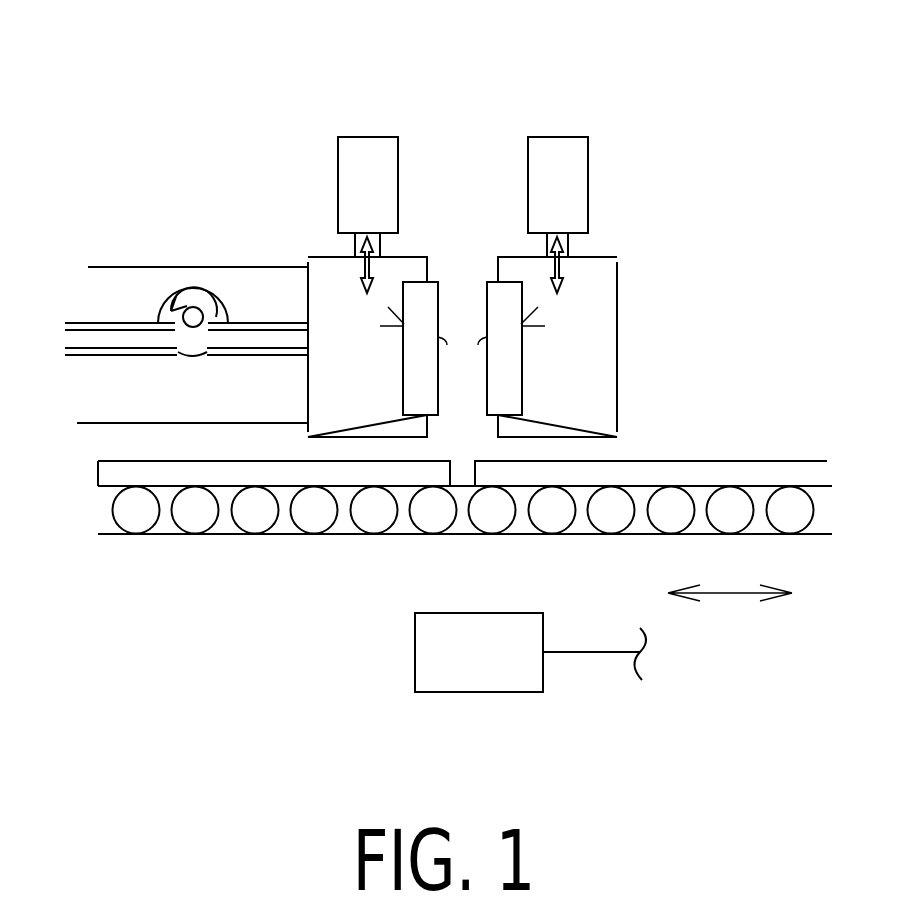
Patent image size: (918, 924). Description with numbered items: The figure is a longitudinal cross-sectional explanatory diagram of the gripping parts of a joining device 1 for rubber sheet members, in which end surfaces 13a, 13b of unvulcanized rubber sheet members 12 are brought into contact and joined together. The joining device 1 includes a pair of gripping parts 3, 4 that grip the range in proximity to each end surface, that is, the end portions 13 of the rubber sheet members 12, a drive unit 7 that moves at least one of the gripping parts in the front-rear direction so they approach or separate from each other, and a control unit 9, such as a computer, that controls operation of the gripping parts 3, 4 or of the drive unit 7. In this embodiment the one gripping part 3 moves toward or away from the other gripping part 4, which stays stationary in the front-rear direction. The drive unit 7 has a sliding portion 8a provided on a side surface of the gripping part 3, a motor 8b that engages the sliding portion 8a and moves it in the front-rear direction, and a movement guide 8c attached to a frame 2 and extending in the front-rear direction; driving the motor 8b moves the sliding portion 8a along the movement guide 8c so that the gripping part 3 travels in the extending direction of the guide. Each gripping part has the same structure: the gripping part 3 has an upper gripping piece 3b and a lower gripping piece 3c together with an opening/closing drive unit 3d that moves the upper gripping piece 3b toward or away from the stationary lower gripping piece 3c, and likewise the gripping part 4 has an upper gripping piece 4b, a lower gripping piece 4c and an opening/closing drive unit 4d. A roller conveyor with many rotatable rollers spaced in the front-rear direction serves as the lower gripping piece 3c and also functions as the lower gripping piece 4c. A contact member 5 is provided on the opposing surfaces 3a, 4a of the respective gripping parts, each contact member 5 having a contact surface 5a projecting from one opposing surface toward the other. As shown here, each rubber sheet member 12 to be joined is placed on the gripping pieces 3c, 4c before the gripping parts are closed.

The joining device 1 is at (693, 130).
The frame 2 is at (128, 278).
The gripping part 3 is at (321, 233).
The opposing surface 3a is at (436, 283).
The upper gripping piece 3b is at (315, 303).
The lower gripping piece 3c is at (345, 527).
The opening/closing drive unit 3d is at (347, 178).
The gripping part 4 is at (604, 233).
The opposing surface 4a is at (490, 282).
The upper gripping piece 4b is at (600, 330).
The lower gripping piece 4c is at (578, 527).
The opening/closing drive unit 4d is at (592, 176).
The contact member 5 is at (521, 324).
The contact surface 5a is at (487, 337).
The drive unit 7 is at (213, 226).
The sliding portion 8a is at (256, 332).
The motor 8b is at (183, 292).
The movement guide 8c is at (243, 356).
The control unit 9 is at (457, 683).
The rubber sheet member 12 is at (710, 442).
The end portion 13 is at (555, 468).
The end surface 13a is at (460, 460).
The end surface 13b is at (470, 458).